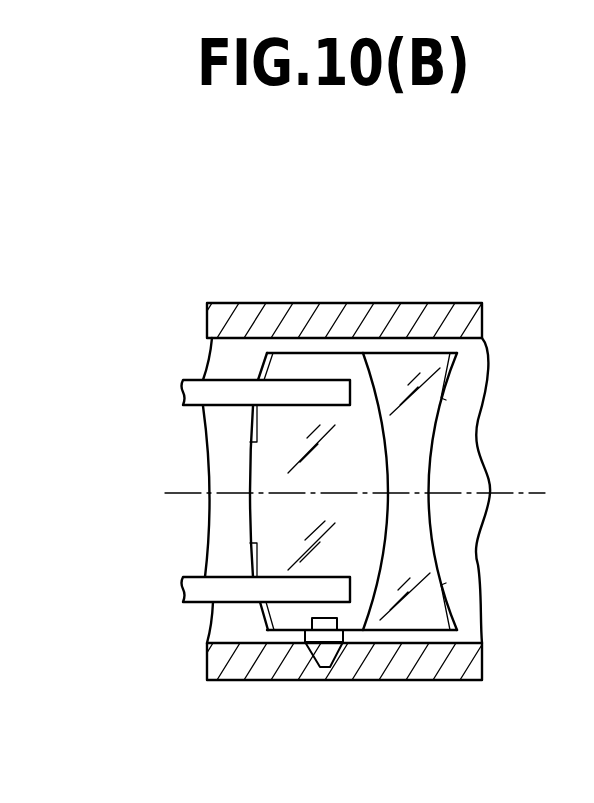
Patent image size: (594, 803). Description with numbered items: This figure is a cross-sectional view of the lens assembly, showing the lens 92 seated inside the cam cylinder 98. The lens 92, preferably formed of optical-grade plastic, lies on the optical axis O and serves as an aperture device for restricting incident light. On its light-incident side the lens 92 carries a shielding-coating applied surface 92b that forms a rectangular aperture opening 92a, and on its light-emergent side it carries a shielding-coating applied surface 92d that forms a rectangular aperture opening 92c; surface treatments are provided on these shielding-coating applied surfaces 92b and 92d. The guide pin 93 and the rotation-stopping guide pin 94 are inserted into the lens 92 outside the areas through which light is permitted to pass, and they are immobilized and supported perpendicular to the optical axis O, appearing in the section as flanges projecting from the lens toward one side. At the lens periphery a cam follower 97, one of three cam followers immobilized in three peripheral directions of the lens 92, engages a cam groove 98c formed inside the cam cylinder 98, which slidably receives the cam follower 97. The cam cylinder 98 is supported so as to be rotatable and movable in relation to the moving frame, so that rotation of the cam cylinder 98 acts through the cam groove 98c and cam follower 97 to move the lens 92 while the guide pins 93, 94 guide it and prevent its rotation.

The lens 92 is at (345, 632).
The rectangular aperture opening 92a is at (247, 442).
The shielding-coating applied surface 92b is at (247, 544).
The rectangular aperture opening 92c is at (446, 402).
The shielding-coating applied surface 92d is at (453, 603).
The guide pin 93 is at (232, 382).
The rotation-stopping guide pin 94 is at (243, 596).
The cam follower 97 is at (323, 652).
The cam cylinder 98 is at (450, 303).
The cam groove 98c is at (358, 631).
The optical axis O is at (527, 493).